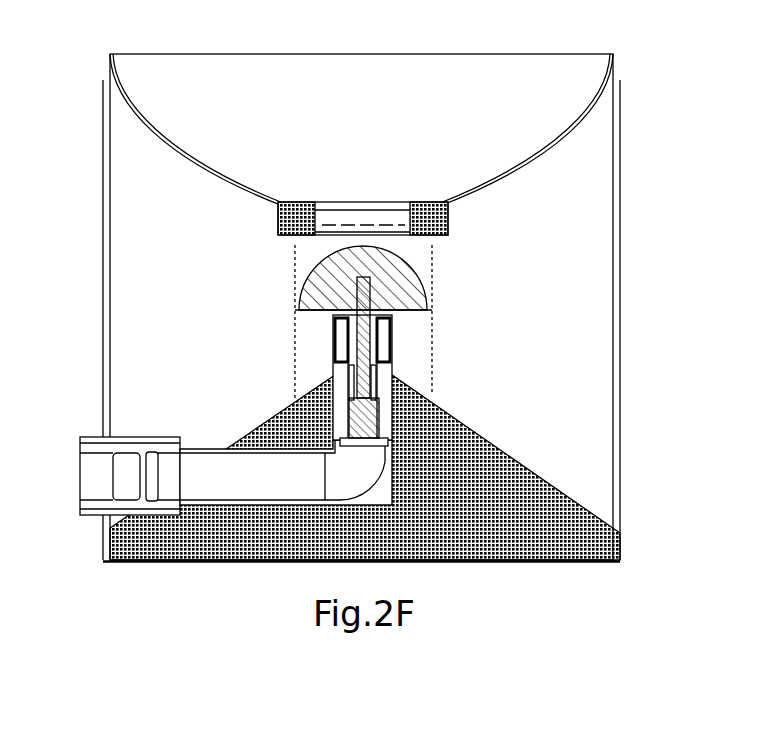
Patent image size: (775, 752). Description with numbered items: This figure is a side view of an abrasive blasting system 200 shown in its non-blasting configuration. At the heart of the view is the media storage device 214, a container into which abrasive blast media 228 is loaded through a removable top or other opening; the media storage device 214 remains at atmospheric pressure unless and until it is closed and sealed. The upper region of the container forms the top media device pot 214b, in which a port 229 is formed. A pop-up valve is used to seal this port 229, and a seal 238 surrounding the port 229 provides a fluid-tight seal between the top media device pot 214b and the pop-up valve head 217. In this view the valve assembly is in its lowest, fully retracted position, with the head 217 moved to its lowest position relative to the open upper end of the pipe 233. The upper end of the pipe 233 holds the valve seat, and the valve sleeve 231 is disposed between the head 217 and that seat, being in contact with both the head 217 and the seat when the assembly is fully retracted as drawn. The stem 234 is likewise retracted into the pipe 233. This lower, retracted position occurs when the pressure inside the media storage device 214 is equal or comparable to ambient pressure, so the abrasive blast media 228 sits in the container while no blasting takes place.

The abrasive blasting system 200 is at (167, 642).
The media storage device 214 is at (620, 182).
The top media device pot 214b is at (178, 168).
The pop-up valve head 217 is at (433, 290).
The abrasive blast media 228 is at (545, 480).
The port 229 is at (350, 225).
The valve sleeve 231 is at (335, 312).
The pipe 233 is at (345, 368).
The stem 234 is at (390, 352).
The seal 238 is at (445, 230).